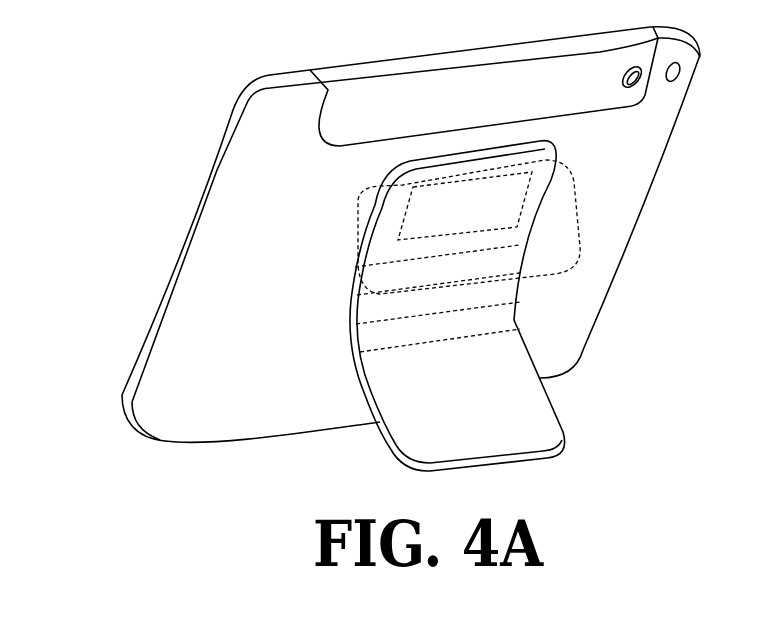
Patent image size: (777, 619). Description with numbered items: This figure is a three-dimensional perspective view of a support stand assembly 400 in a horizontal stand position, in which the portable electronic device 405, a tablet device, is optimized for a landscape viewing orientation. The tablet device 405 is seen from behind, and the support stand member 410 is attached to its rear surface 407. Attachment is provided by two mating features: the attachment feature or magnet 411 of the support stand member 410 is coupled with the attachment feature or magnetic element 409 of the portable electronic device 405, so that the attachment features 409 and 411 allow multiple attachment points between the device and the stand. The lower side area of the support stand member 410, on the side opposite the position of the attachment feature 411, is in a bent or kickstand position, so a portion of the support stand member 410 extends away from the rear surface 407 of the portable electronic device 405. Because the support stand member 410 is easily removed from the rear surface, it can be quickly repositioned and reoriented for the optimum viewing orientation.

The support stand assembly 400 is at (124, 52).
The portable electronic device 405 is at (201, 192).
The rear surface 407 is at (170, 339).
The attachment feature 409 is at (357, 210).
The support stand member 410 is at (351, 361).
The attachment feature 411 is at (513, 208).